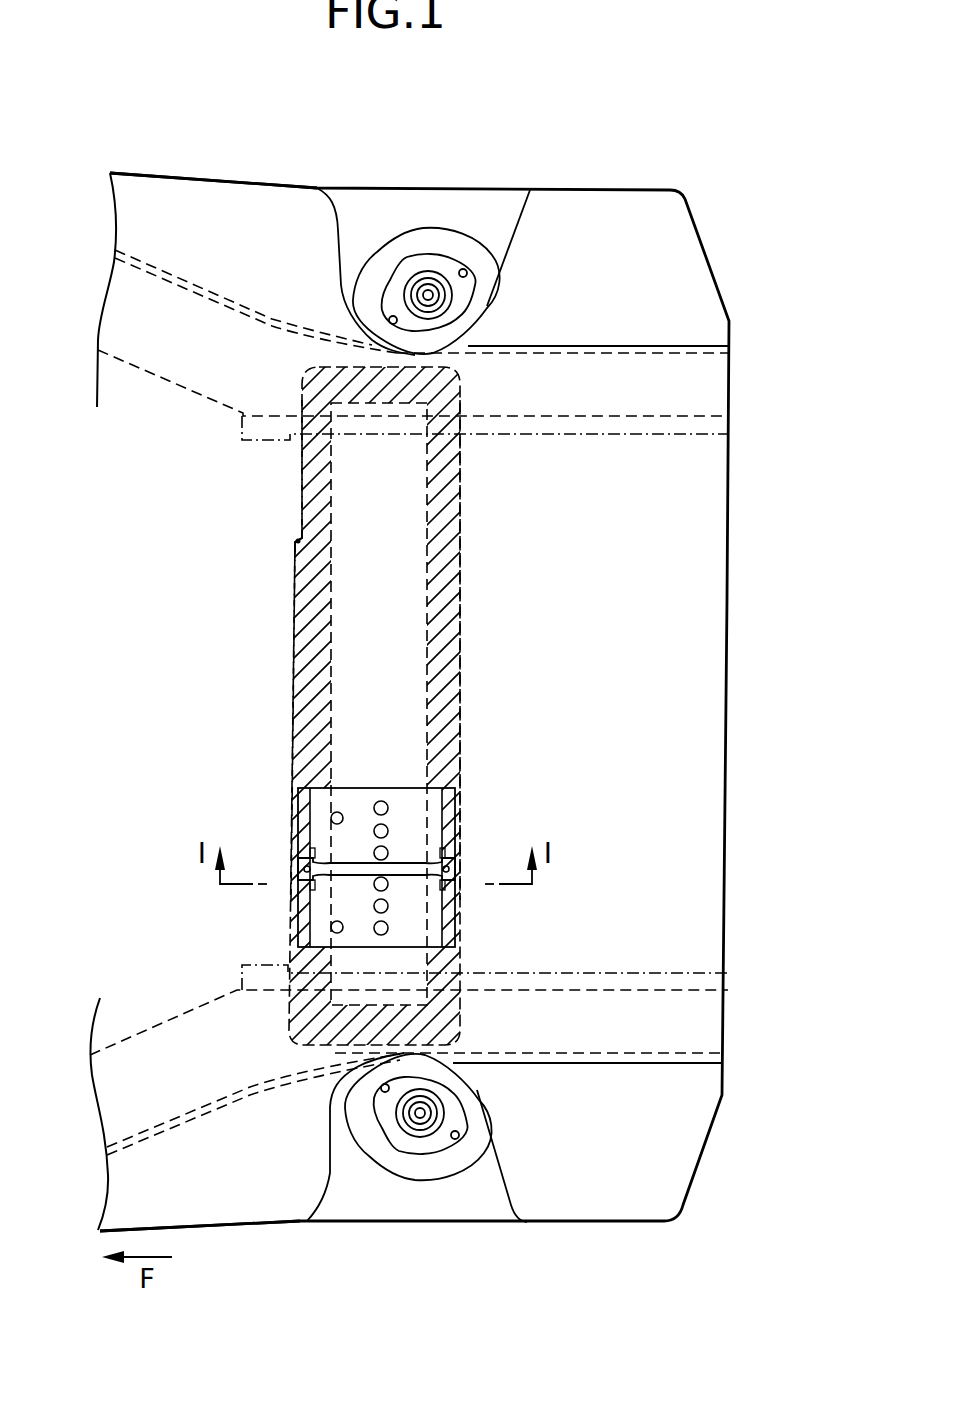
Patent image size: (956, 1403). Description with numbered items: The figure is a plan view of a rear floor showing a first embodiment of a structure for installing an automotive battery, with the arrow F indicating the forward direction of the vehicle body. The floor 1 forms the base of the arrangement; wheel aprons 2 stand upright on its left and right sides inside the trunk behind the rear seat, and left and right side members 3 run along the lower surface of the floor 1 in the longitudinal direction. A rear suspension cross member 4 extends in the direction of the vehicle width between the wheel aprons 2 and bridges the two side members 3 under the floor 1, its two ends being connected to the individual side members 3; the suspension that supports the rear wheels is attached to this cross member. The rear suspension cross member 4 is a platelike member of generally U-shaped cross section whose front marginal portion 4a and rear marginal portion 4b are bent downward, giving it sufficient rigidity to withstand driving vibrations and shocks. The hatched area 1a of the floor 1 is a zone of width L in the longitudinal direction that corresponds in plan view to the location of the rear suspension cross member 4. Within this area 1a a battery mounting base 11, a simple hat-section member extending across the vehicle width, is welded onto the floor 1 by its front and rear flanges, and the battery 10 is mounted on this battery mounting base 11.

The floor 1 is at (700, 605).
The area 1a is at (297, 542).
The wheel apron 2 is at (214, 190).
The side member 3 is at (164, 368).
The rear suspension cross member 4 is at (413, 585).
The front marginal portion 4a is at (295, 650).
The rear marginal portion 4b is at (440, 648).
The battery 10 is at (432, 800).
The battery mounting base 11 is at (445, 833).